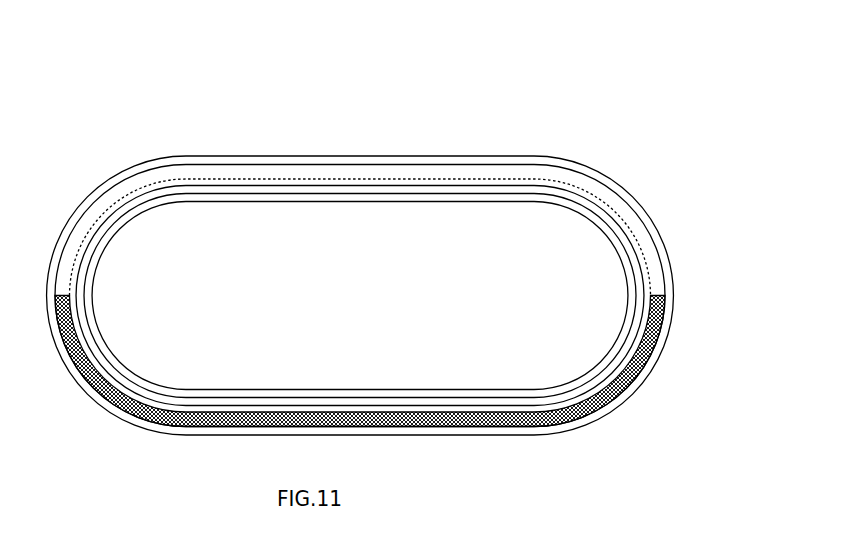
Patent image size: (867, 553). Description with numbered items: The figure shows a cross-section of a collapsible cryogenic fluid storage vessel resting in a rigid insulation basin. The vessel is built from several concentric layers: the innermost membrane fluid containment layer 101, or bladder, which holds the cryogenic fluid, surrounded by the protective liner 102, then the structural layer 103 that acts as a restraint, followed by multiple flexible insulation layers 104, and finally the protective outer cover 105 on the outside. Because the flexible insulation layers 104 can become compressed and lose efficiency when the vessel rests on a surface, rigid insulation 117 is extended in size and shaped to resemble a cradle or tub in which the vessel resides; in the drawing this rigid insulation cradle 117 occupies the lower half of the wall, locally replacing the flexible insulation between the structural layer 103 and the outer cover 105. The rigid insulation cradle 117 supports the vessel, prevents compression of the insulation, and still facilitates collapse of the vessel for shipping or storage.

The membrane fluid containment layer 101 is at (588, 208).
The protective liner 102 is at (531, 186).
The structural layer 103 is at (475, 178).
The insulation layers 104 is at (419, 160).
The protective outer cover 105 is at (349, 142).
The rigid insulation cradle 117 is at (529, 435).